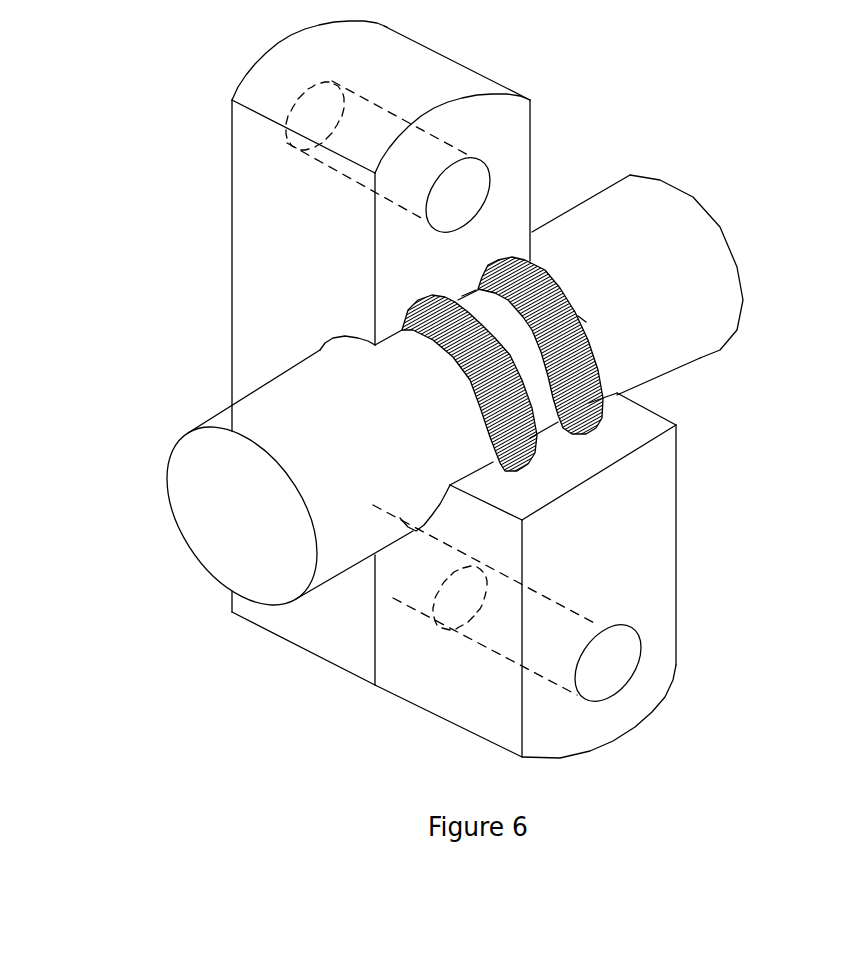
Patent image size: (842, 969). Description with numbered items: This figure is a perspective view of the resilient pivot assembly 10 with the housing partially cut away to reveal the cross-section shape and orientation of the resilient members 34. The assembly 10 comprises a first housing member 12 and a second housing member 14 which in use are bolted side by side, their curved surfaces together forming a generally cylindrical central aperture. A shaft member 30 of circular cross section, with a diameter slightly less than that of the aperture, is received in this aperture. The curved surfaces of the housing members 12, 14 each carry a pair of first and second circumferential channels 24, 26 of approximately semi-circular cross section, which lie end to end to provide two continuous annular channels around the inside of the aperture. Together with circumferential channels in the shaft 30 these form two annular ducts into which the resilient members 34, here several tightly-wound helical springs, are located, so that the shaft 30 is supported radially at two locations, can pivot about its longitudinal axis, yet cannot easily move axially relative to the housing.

The resilient pivot assembly 10 is at (178, 207).
The first housing member 12 is at (250, 370).
The second housing member 14 is at (640, 580).
The first circumferential channel 24 is at (424, 292).
The second circumferential channel 26 is at (495, 257).
The shaft member 30 is at (713, 243).
The resilient member 34 is at (587, 317).